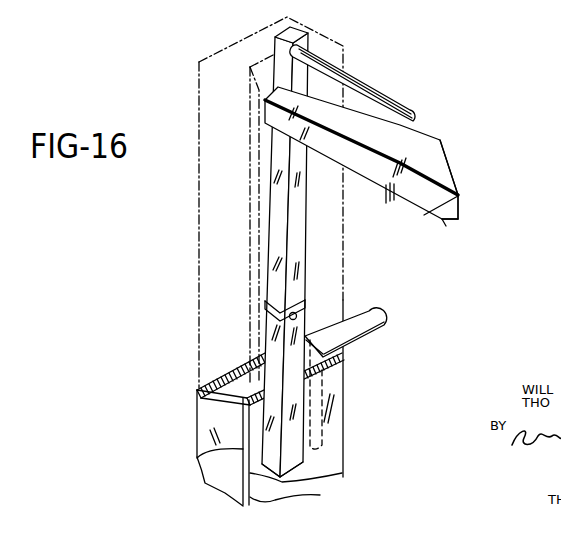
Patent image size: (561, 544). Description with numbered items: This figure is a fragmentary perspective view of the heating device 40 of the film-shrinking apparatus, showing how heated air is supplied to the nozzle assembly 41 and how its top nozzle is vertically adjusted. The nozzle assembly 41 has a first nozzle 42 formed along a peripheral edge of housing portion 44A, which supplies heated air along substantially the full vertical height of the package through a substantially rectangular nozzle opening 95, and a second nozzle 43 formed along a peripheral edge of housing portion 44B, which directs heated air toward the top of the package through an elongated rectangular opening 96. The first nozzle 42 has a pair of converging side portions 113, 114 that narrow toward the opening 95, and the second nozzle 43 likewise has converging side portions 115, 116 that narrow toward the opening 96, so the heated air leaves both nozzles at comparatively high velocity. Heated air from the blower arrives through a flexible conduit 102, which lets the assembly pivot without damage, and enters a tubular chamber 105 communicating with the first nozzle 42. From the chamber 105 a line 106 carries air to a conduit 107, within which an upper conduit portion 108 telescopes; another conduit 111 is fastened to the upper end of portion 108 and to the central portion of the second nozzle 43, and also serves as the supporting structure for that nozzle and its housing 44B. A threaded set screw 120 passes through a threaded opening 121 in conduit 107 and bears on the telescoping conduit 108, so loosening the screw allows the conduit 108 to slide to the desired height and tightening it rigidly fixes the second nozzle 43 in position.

The device 40 is at (482, 122).
The nozzle assembly 41 is at (198, 435).
The first nozzle 42 is at (237, 470).
The second nozzle 43 is at (458, 196).
The housing portion 44A is at (190, 286).
The housing portion 44B is at (466, 170).
The nozzle opening 95 is at (197, 458).
The elongated opening 96 is at (412, 213).
The flexible conduit 102 is at (366, 346).
The tubular chamber 105 is at (313, 357).
The line 106 is at (318, 396).
The conduit 107 is at (298, 425).
The upper conduit portion 108 is at (293, 250).
The conduit 111 is at (363, 86).
The side portion 113 is at (320, 495).
The side portion 114 is at (283, 478).
The side portion 115 is at (437, 238).
The side portion 116 is at (452, 228).
The threaded set screw 120 is at (305, 300).
The threaded opening 121 is at (290, 317).